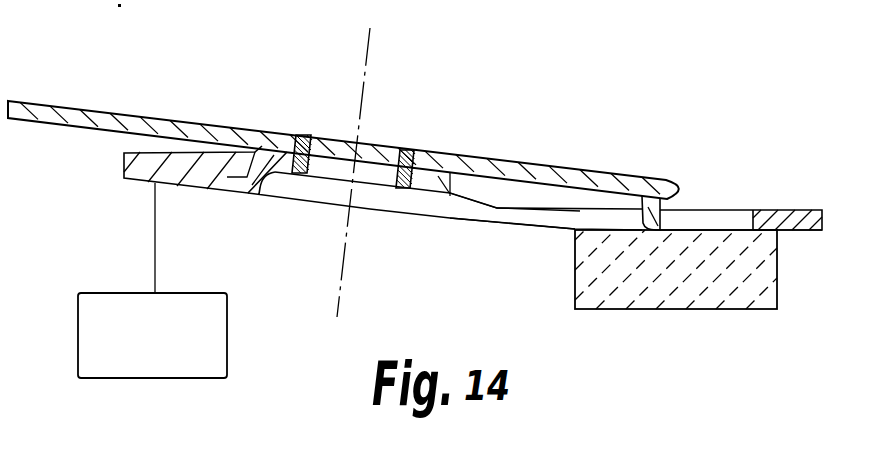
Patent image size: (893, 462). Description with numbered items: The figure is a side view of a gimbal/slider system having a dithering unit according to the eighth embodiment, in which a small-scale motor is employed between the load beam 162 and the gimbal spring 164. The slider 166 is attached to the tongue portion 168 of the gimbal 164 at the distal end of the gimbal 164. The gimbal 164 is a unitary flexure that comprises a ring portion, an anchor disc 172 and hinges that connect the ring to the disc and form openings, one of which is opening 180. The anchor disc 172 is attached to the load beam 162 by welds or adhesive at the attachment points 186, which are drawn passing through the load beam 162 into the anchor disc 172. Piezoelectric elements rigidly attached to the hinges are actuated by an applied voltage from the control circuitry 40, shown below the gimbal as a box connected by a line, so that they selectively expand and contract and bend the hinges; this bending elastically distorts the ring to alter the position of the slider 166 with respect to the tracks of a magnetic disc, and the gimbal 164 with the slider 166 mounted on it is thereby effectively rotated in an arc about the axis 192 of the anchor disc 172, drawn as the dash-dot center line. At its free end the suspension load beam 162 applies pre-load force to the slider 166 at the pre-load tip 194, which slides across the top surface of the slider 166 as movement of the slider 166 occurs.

The load beam 162 is at (67, 104).
The attachment points 186 is at (304, 137).
The gimbal spring 164 is at (257, 199).
The axis of anchor disc 192 is at (351, 222).
The anchor disc 172 is at (374, 189).
The opening 180 is at (507, 216).
The pre-load tip 194 is at (662, 219).
The tongue portion 168 is at (798, 210).
The slider 166 is at (705, 309).
The control circuitry 40 is at (141, 381).